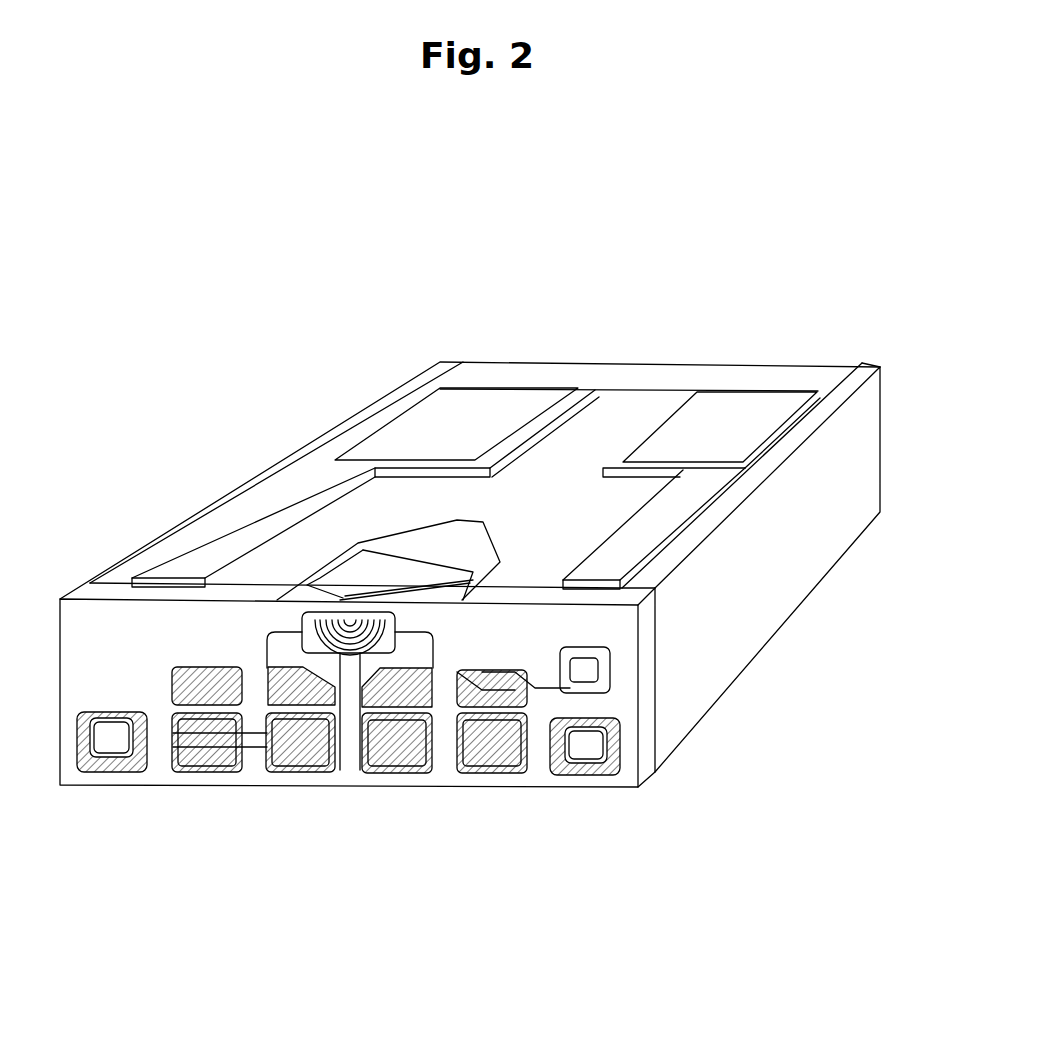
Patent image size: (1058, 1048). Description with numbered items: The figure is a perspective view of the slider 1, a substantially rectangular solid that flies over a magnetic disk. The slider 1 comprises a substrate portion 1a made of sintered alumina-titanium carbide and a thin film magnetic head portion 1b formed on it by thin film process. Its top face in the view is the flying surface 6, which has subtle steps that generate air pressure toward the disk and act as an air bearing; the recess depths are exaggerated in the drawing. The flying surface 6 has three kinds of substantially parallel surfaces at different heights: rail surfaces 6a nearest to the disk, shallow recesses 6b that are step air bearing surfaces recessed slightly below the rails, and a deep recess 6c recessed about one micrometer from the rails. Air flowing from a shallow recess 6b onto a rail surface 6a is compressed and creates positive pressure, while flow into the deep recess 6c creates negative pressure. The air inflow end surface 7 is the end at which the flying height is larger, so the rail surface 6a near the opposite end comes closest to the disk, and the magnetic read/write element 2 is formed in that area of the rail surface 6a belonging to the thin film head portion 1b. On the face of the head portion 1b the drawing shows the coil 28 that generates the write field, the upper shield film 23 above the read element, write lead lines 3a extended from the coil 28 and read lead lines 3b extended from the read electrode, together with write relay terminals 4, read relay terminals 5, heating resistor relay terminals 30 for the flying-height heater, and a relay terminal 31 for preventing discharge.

The slider 1 is at (915, 362).
The substrate portion 1a is at (858, 456).
The thin film magnetic head portion 1b is at (648, 740).
The magnetic read/write element 2 is at (352, 598).
The write lead lines 3a is at (533, 688).
The read lead lines 3b is at (250, 757).
The write relay terminals 4 is at (388, 738).
The read relay terminals 5 is at (187, 740).
The flying surface 6 is at (298, 338).
The rail surfaces 6a is at (375, 513).
The shallow recesses 6b is at (338, 580).
The deep recess 6c is at (372, 575).
The air inflow end surface 7 is at (722, 360).
The upper shield film 23 is at (310, 640).
The coil 28 is at (375, 637).
The heating resistor relay terminals 30 is at (108, 750).
The relay terminal for preventing discharge 31 is at (590, 673).